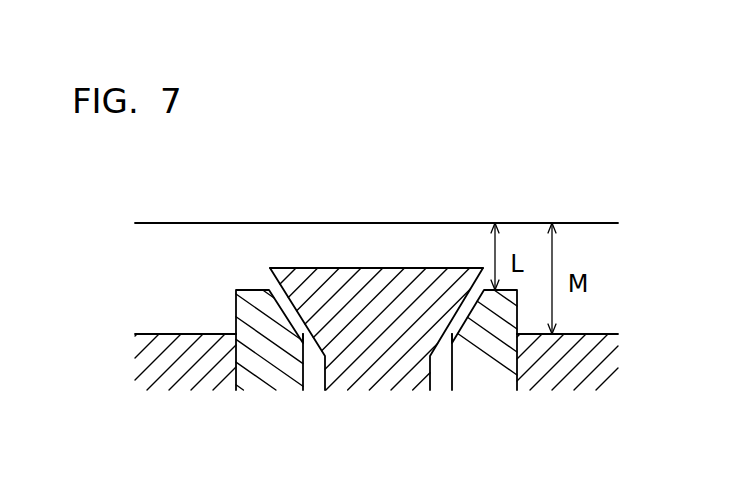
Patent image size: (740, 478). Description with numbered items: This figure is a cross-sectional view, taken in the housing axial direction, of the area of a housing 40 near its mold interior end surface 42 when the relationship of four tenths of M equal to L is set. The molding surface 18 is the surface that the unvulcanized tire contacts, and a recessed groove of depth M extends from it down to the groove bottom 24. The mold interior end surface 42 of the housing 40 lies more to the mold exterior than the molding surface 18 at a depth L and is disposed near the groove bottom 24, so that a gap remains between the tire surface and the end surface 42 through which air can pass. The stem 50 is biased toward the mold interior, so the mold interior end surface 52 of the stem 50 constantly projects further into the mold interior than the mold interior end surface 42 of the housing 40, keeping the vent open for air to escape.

The molding surface 18 is at (373, 222).
The groove bottom 24 is at (179, 334).
The housing 40 is at (267, 382).
The mold interior end surface 42 is at (247, 290).
The stem 50 is at (369, 380).
The mold interior end surface 52 is at (322, 268).